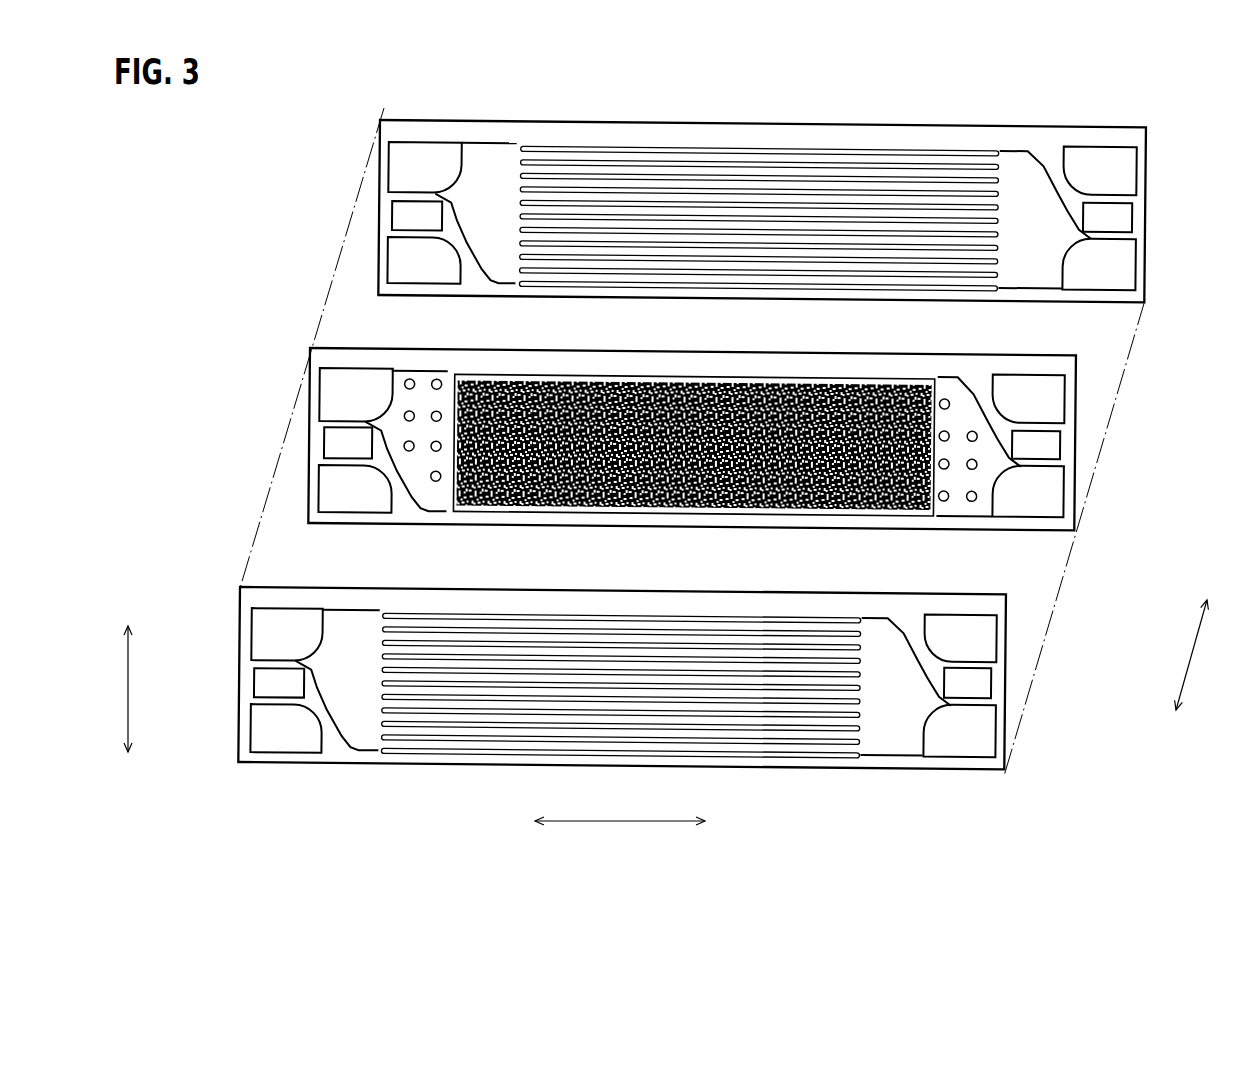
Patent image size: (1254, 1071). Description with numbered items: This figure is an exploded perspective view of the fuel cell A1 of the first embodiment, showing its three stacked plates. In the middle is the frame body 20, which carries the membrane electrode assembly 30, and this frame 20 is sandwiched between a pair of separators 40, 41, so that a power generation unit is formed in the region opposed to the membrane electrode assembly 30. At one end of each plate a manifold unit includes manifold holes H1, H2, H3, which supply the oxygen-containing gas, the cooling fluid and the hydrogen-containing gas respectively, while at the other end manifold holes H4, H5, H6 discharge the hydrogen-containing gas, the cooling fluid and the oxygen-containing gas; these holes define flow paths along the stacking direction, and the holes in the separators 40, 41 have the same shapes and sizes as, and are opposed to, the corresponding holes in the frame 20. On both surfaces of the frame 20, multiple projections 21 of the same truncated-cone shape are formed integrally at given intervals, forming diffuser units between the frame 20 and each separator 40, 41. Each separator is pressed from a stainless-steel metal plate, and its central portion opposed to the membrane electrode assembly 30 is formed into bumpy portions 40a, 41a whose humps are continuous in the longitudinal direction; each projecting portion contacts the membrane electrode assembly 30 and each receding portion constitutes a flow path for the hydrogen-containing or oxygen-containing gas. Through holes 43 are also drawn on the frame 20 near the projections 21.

The separator 40 is at (508, 118).
The bumpy portion 40a is at (735, 172).
The frame body 20 is at (488, 349).
The membrane electrode assembly 30 is at (737, 372).
The through holes 43 is at (423, 385).
The projection 21 is at (440, 481).
The separator 41 is at (394, 773).
The bumpy portion 41a is at (650, 628).
The fuel cell A1 is at (1018, 788).
The manifold hole H1 is at (395, 163).
The manifold hole H2 is at (403, 218).
The manifold hole H3 is at (402, 268).
The manifold hole H4 is at (1120, 168).
The manifold hole H5 is at (1120, 217).
The manifold hole H6 is at (1120, 265).